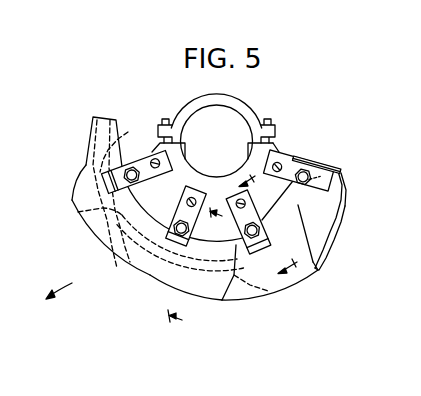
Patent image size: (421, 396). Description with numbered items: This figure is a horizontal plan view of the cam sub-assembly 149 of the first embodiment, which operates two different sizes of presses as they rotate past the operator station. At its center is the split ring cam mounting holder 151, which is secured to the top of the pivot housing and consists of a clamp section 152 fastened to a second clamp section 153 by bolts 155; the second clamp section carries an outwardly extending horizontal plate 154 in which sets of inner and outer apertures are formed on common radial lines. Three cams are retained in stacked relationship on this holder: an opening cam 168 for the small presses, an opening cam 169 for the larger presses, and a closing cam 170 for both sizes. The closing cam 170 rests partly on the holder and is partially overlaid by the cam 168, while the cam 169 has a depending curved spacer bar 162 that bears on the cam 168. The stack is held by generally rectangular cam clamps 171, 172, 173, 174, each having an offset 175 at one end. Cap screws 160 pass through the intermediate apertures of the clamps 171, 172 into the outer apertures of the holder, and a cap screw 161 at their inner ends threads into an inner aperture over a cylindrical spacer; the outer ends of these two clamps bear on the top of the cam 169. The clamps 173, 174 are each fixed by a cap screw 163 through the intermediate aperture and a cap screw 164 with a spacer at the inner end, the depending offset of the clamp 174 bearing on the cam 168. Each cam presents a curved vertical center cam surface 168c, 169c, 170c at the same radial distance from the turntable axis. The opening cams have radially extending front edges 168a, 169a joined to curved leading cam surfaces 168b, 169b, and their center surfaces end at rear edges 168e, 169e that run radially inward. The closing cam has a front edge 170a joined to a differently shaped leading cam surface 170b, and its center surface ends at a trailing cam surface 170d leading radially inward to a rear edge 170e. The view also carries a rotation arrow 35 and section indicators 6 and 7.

The rotation direction arrow 35 is at (74, 287).
The section line 6- 6 is at (199, 270).
The section line 7- 7 is at (263, 229).
The cam sub-assembly 149 is at (332, 262).
The split ring cam mounting holder 151 is at (240, 96).
The clamp section 152 is at (192, 108).
The second clamp section 153 is at (181, 145).
The horizontal plate 154 is at (287, 208).
The bolts 155 is at (270, 119).
The cap screws 160 is at (133, 188).
The cap screw 161 is at (192, 196).
The depending curved spacer bar 162 is at (140, 238).
The cap screw 163 is at (321, 161).
The cap screw 164 is at (278, 164).
The opening cam for the small presses 168 is at (312, 268).
The front edge 168a is at (118, 139).
The leading cam surface 168b is at (78, 212).
The center cam surface 168c is at (311, 272).
The rear edge 168e is at (312, 256).
The opening cam for the larger presses 169 is at (85, 232).
The front edge 169a is at (97, 117).
The leading cam surface 169b is at (84, 167).
The center cam surface 169c is at (136, 283).
The rear edge 169e is at (233, 288).
The closing cam 170 is at (327, 226).
The front edge 170a is at (92, 131).
The leading cam surface 170b is at (272, 287).
The center cam surface 170c is at (318, 268).
The trailing cam surface 170d is at (344, 197).
The rear edge 170e is at (344, 168).
The cam clamp 171 is at (121, 193).
The cam clamp 172 is at (181, 248).
The cam clamp 173 is at (268, 231).
The cam clamp 174 is at (296, 163).
The offset 175 is at (312, 192).